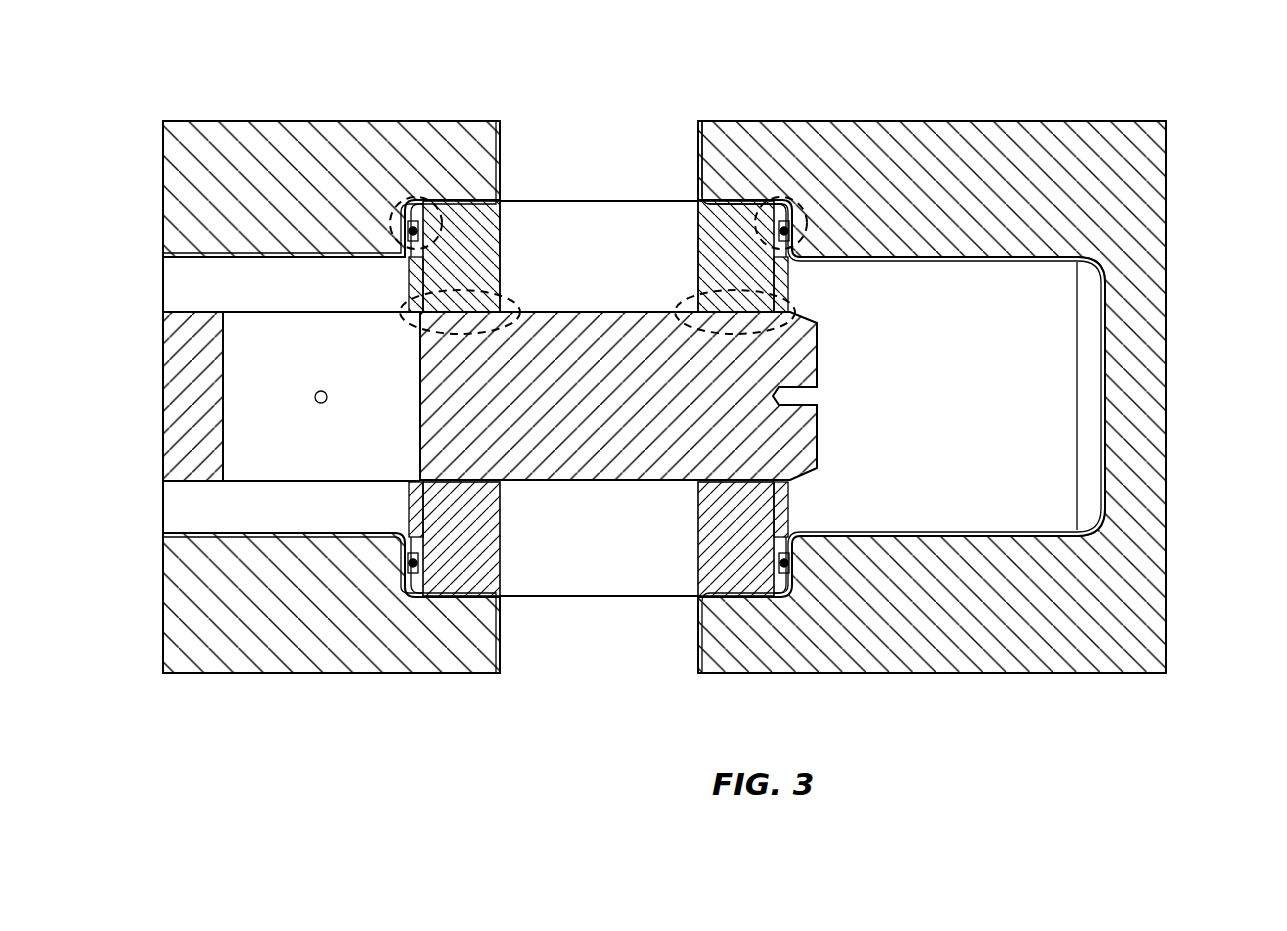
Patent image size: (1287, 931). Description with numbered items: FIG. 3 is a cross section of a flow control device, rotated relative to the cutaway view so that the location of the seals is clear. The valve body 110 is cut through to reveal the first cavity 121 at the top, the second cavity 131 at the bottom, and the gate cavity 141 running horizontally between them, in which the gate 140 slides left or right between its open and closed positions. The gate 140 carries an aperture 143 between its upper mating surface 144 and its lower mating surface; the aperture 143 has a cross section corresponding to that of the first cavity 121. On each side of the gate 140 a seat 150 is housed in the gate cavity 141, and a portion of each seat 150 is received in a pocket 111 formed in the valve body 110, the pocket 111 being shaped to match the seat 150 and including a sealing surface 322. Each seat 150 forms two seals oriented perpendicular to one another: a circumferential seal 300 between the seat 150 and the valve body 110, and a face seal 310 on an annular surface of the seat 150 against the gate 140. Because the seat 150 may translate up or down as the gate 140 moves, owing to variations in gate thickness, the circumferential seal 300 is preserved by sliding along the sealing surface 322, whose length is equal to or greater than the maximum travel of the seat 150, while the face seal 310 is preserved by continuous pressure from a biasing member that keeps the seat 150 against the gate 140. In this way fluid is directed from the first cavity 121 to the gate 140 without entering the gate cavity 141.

The valve body 110 is at (1051, 142).
The pocket 111 is at (773, 174).
The first cavity 121 is at (658, 140).
The second cavity 131 is at (552, 651).
The gate 140 is at (172, 418).
The gate cavity 141 is at (1052, 366).
The aperture 143 is at (266, 396).
The upper mating surface 144 is at (277, 302).
The seat 150 is at (563, 227).
The circumferential seal 300 is at (399, 238).
The face seal 310 is at (404, 306).
The sealing surface 322 is at (441, 178).